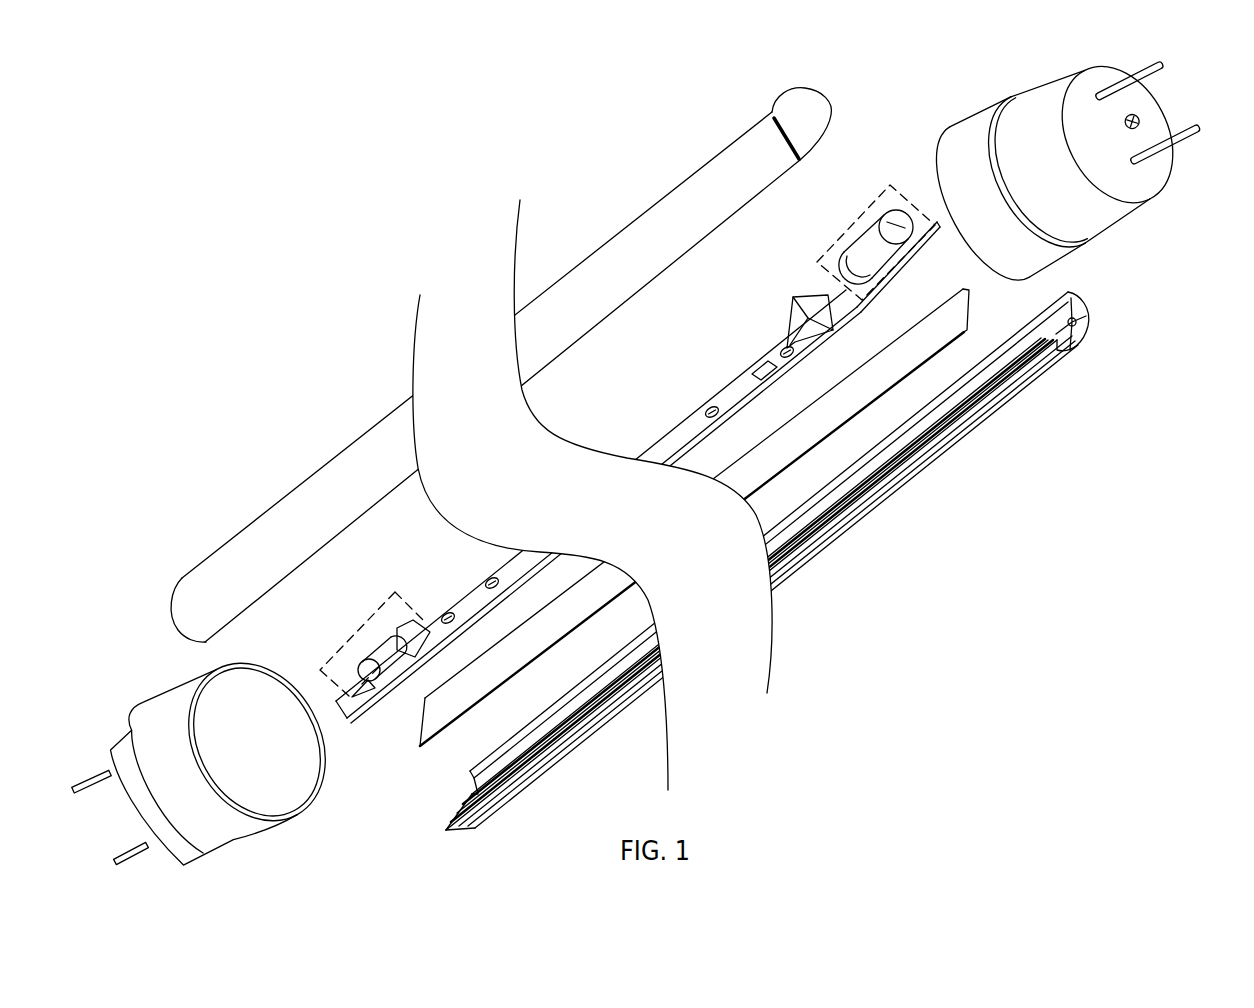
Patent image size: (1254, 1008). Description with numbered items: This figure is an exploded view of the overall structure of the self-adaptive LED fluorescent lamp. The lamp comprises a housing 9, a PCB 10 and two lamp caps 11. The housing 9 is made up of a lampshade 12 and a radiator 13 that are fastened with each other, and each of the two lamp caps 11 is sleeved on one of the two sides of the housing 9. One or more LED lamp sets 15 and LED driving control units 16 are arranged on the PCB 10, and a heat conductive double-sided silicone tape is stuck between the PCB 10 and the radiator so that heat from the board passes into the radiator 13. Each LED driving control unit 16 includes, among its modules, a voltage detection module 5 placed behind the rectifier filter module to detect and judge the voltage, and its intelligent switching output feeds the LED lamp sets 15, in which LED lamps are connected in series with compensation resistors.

The voltage detection module 5 is at (435, 718).
The housing 9 is at (497, 657).
The PCB 10 is at (730, 402).
The lamp cap 11 is at (960, 183).
The lampshade 12 is at (718, 190).
The radiator 13 is at (1010, 398).
The LED lamp set 15 is at (747, 385).
The LED driving control unit 16 is at (857, 227).